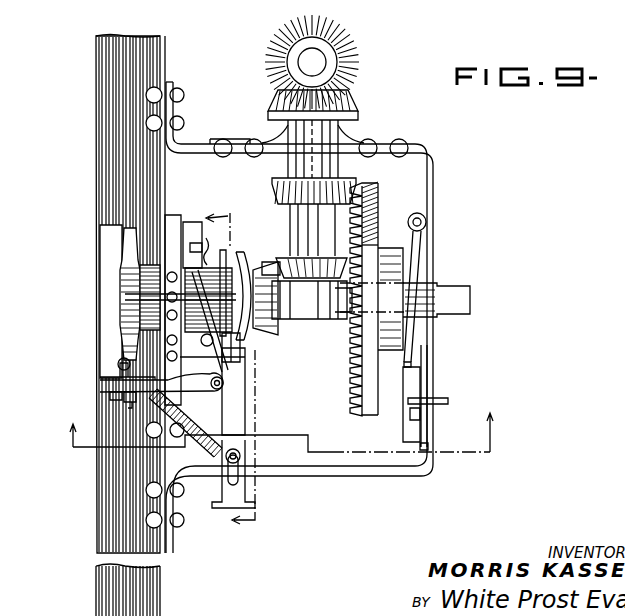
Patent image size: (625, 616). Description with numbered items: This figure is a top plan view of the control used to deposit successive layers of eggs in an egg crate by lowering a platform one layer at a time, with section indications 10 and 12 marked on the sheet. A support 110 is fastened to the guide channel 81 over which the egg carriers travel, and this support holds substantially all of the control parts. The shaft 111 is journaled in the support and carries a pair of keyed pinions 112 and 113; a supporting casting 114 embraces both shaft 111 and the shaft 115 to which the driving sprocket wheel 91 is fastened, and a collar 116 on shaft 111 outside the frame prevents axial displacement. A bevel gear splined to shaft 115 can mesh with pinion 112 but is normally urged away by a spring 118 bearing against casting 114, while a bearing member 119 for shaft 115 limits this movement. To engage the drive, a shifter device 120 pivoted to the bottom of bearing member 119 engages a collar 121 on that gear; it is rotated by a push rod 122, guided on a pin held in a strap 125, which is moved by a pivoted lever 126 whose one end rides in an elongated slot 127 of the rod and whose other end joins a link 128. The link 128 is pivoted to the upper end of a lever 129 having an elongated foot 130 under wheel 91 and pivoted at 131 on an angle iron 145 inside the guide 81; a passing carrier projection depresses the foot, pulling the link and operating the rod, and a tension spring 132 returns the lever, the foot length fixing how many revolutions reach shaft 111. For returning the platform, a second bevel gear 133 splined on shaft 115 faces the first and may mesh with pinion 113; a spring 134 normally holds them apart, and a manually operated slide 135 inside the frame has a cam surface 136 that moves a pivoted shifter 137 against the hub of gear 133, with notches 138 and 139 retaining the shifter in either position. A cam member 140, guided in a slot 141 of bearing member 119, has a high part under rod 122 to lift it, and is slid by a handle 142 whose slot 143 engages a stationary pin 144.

The section line 10 is at (281, 434).
The section line 12 is at (242, 362).
The channel 81 is at (113, 118).
The sprocket wheel 91 is at (125, 238).
The support 110 is at (433, 187).
The shaft 111 is at (318, 168).
The pinion 112 is at (342, 259).
The pinion 113 is at (290, 195).
The supporting casting 114 is at (319, 320).
The shaft 115 is at (452, 288).
The collar 116 is at (340, 138).
The spring 118 is at (282, 318).
The bearing member 119 is at (218, 235).
The shifter device 120 is at (291, 262).
The collar 121 is at (292, 268).
The push rod 122 is at (160, 296).
The strap 125 is at (185, 280).
The pivoted lever 126 is at (245, 358).
The elongated slot 127 is at (206, 240).
The link 128 is at (205, 386).
The lever 129 is at (120, 378).
The elongated foot 130 is at (110, 252).
The pivot 131 is at (122, 397).
The tension spring 132 is at (222, 422).
The second bevel gear 133 is at (373, 208).
The spring 134 is at (346, 330).
The slide 135 is at (430, 386).
The cam surface 136 is at (432, 370).
The pivoted shifter 137 is at (415, 252).
The notch 138 is at (410, 362).
The notch 139 is at (410, 372).
The cam member 140 is at (236, 256).
The slot 141 is at (241, 262).
The handle 142 is at (246, 384).
The slot 143 is at (236, 474).
The stationary pin 144 is at (241, 456).
The angle iron 145 is at (110, 389).